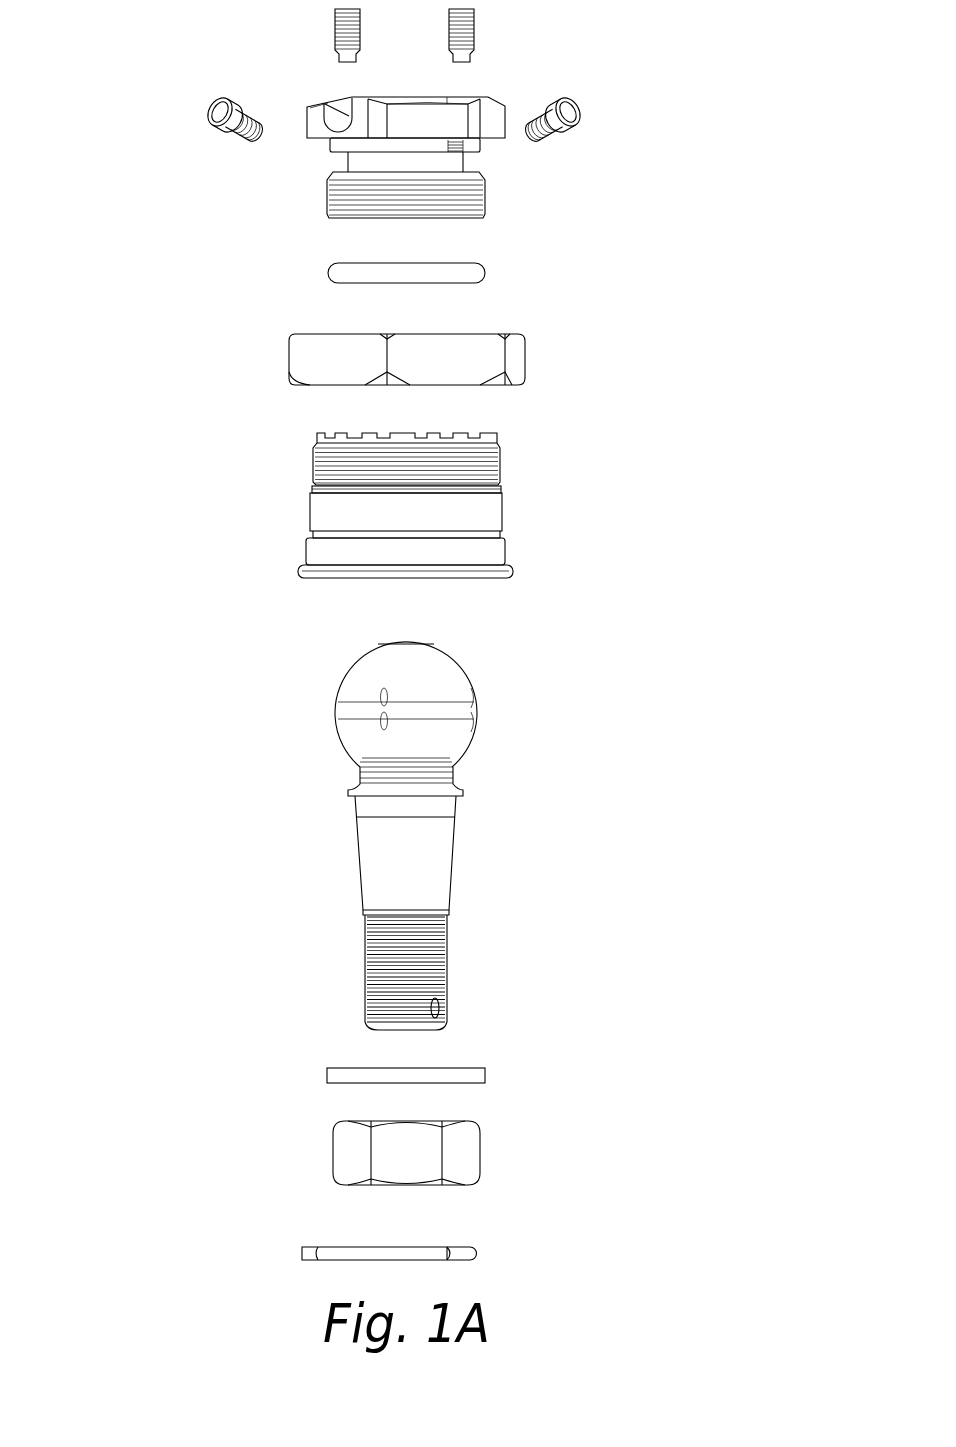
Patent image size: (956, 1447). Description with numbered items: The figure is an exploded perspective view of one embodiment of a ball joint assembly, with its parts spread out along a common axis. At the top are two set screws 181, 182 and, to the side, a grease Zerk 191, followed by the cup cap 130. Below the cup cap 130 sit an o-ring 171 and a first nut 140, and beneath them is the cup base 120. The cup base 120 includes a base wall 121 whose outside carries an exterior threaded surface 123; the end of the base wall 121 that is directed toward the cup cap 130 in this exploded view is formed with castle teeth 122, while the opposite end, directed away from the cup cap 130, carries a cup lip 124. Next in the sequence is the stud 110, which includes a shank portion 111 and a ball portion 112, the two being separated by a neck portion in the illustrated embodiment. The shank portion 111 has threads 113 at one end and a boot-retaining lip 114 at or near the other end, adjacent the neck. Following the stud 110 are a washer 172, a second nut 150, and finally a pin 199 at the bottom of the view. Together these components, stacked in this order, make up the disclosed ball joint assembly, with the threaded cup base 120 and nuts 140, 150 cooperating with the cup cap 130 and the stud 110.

The stud 110 is at (408, 836).
The shank portion 111 is at (445, 844).
The ball portion 112 is at (471, 672).
The threads 113 is at (454, 962).
The boot-retaining lip 114 is at (470, 780).
The cup base 120 is at (413, 475).
The base wall 121 is at (510, 509).
The castle teeth 122 is at (493, 420).
The exterior threaded surface 123 is at (513, 461).
The cup lip 124 is at (521, 557).
The cup cap 130 is at (310, 192).
The first nut 140 is at (277, 350).
The second nut 150 is at (318, 1150).
The o-ring 171 is at (312, 258).
The washer 172 is at (324, 1053).
The set screw 181 is at (314, 30).
The set screw 182 is at (508, 27).
The grease Zerk 191 is at (185, 104).
The pin 199 is at (289, 1244).